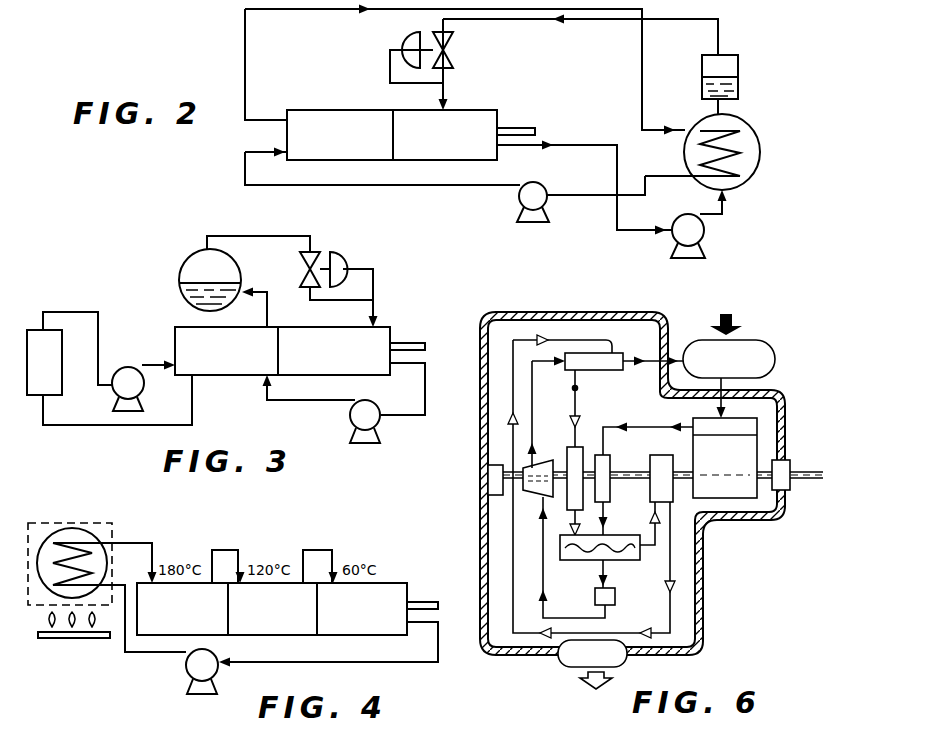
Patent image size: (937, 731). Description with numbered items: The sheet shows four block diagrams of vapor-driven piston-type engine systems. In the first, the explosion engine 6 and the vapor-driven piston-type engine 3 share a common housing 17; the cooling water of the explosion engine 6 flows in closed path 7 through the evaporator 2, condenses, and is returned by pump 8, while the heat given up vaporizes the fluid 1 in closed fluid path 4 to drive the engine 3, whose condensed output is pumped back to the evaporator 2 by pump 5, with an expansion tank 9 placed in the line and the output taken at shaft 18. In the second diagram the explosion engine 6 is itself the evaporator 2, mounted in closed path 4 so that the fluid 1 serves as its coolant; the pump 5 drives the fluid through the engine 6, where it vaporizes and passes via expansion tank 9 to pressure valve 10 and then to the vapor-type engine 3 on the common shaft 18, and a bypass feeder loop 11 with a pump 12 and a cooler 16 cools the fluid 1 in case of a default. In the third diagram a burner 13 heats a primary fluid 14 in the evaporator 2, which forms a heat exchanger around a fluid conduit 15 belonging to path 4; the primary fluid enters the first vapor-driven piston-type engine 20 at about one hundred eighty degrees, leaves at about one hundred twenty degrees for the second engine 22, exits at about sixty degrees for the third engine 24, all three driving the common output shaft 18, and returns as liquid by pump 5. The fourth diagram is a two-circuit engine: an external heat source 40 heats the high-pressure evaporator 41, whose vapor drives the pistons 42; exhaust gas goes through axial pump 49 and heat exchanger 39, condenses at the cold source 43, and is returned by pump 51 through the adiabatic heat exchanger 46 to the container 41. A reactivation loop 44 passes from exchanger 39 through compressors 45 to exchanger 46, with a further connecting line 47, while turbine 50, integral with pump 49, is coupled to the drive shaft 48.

In FIG. 2, the fluid 1 is at (738, 84).
In FIG. 3, the fluid 1 is at (182, 291).
In FIG. 2, the evaporator 2 is at (757, 135).
In FIG. 4, the evaporator 2 is at (90, 530).
In FIG. 2, the vapor-driven piston-type engine 3 is at (454, 142).
In FIG. 3, the vapor-driven piston-type engine 3 is at (341, 359).
In FIG. 2, the closed fluid path 4 is at (601, 145).
In FIG. 3, the closed fluid path 4 is at (267, 304).
In FIG. 4, the closed fluid path 4 is at (153, 545).
In FIG. 2, the pump 5 is at (704, 232).
In FIG. 3, the pump 5 is at (350, 420).
In FIG. 4, the pump 5 is at (186, 668).
In FIG. 2, the explosion engine 6 is at (346, 142).
In FIG. 3, the explosion engine 6 is at (237, 359).
In FIG. 2, the closed path 7 is at (642, 92).
In FIG. 2, the pump 8 is at (547, 190).
In FIG. 2, the expansion tank 9 is at (738, 62).
In FIG. 3, the expansion tank 9 is at (180, 268).
In FIG. 2, the pressure valve 10 is at (453, 40).
In FIG. 3, the pressure valve 10 is at (300, 262).
In FIG. 3, the bypass feeder loop 11 is at (192, 404).
In FIG. 3, the pump 12 is at (112, 402).
In FIG. 4, the burner 13 is at (78, 638).
In FIG. 4, the fluid 14 is at (42, 540).
In FIG. 4, the fluid conduit 15 is at (92, 560).
In FIG. 3, the cooler 16 is at (62, 364).
In FIG. 2, the common housing 17 is at (326, 98).
In FIG. 2, the common shaft 18 is at (517, 128).
In FIG. 3, the common shaft 18 is at (406, 343).
In FIG. 4, the common shaft 18 is at (425, 602).
In FIG. 4, the first vapor-driven piston-type engine 20 is at (198, 620).
In FIG. 4, the second vapor-driven piston-type engine 22 is at (286, 620).
In FIG. 4, the third vapor-driven piston-type engine 24 is at (376, 620).
In FIG. 6, the heat exchanger 39 is at (585, 560).
In FIG. 6, the external heat source 40 is at (730, 312).
In FIG. 6, the high-pressure evaporator 41 is at (744, 371).
In FIG. 6, the engine pistons 42 is at (740, 477).
In FIG. 6, the cold source 43 is at (564, 662).
In FIG. 6, the fluid path 44 is at (613, 562).
In FIG. 6, the compressors 45 is at (610, 470).
In FIG. 6, the adiabatic heat exchanger 46 is at (613, 356).
In FIG. 6, the line 47 is at (532, 376).
In FIG. 6, the drive shaft 48 is at (808, 480).
In FIG. 6, the axial pump 49 is at (612, 492).
In FIG. 6, the turbine 50 is at (568, 448).
In FIG. 6, the pump 51 is at (530, 490).